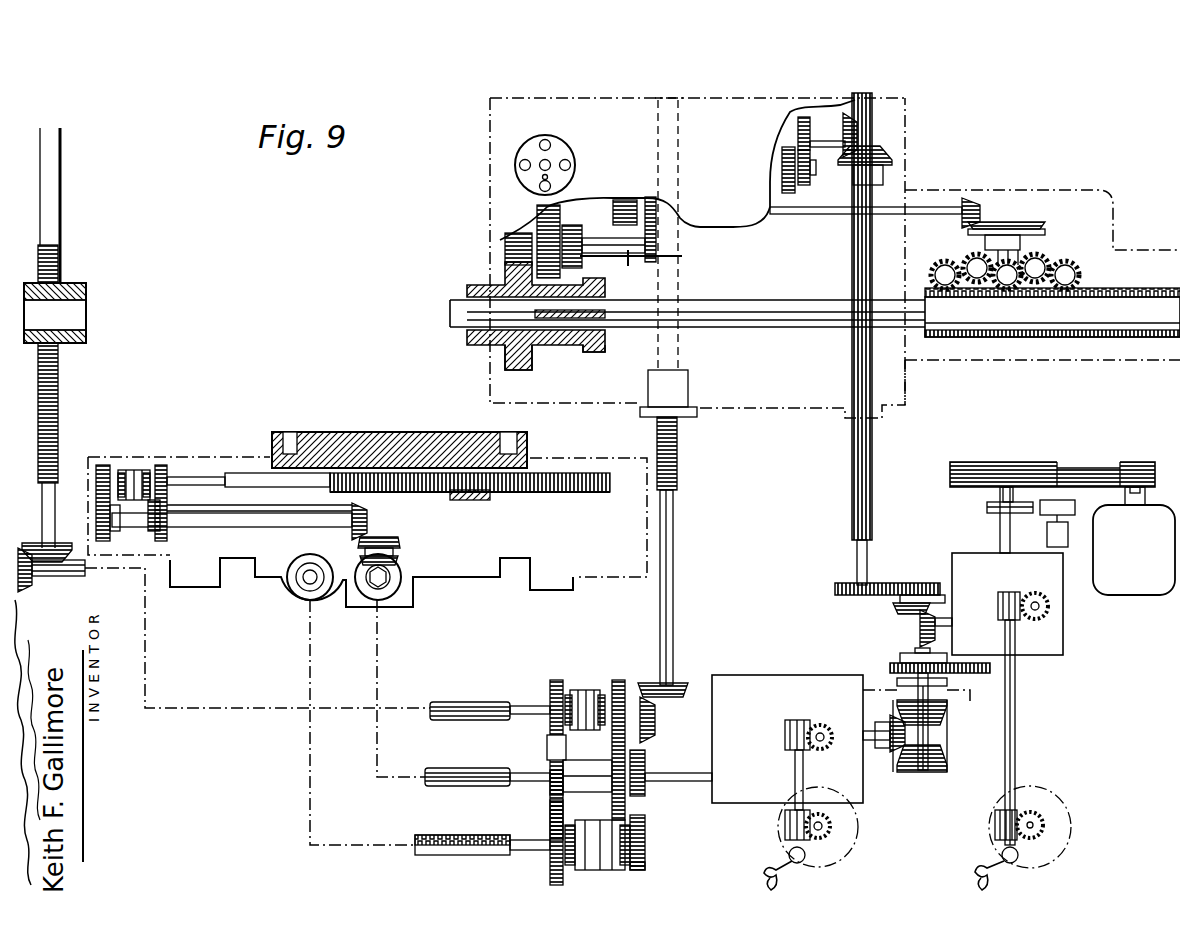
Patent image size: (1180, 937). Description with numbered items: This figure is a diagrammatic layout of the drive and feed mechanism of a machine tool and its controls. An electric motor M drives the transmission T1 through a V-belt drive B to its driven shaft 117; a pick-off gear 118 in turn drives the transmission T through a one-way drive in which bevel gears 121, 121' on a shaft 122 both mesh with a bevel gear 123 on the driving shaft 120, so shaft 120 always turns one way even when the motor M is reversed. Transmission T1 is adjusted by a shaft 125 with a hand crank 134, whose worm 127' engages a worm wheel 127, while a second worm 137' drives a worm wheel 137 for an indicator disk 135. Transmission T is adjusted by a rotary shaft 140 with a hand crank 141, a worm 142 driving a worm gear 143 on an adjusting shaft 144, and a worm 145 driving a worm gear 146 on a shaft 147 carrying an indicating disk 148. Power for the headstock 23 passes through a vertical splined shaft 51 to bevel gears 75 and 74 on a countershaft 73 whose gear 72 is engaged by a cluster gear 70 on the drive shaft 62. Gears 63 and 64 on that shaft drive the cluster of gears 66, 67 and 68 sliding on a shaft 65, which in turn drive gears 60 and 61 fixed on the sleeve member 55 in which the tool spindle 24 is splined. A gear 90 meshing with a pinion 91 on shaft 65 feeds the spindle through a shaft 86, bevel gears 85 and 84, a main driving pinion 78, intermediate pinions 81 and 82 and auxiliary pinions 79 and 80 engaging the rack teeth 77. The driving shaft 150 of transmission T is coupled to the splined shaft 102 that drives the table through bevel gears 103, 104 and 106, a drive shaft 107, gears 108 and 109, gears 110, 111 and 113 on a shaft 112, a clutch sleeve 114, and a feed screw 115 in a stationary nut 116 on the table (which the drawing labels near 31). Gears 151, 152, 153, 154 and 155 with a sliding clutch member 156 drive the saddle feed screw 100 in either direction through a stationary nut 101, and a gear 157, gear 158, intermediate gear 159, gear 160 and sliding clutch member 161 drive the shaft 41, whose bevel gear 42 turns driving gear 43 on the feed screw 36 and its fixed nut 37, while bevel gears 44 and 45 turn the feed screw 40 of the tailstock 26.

The headstock 23 is at (639, 198).
The tool spindle 24 is at (450, 305).
The tailstock 26 is at (86, 335).
The platform 31 is at (352, 428).
The feed screw 36 is at (677, 465).
The fixed nut 37 is at (688, 385).
The feed screw 40 is at (58, 395).
The shaft 41 is at (443, 702).
The bevel gear 42 is at (656, 720).
The driving gear 43 is at (670, 697).
The bevel gear 44 is at (18, 565).
The bevel gear 45 is at (44, 543).
The splined shaft 51 is at (855, 541).
The sleeve member 55 is at (475, 345).
The gear 60 is at (532, 372).
The gear 61 is at (598, 354).
The drive shaft 62 is at (584, 206).
The gear 63 is at (560, 205).
The gear 64 is at (626, 200).
The shaft 65 is at (629, 266).
The gear 66 is at (505, 240).
The gear 67 is at (540, 213).
The gear 68 is at (580, 262).
The cluster gear 70 is at (780, 180).
The gear 72 is at (800, 121).
The countershaft 73 is at (798, 136).
The bevel gear 74 is at (858, 131).
The bevel gear 75 is at (880, 156).
The rack teeth 77 is at (1126, 286).
The main driving pinion 78 is at (1003, 292).
The auxiliary driving pinion 79 is at (1072, 270).
The auxiliary driving pinion 80 is at (940, 266).
The intermediate pinion 81 is at (1046, 262).
The intermediate pinion 82 is at (971, 258).
The bevel gear 84 is at (1036, 224).
The bevel gear 85 is at (975, 200).
The shaft 86 is at (925, 207).
The gear 90 is at (684, 222).
The pinion 91 is at (682, 256).
The feed screw 100 is at (450, 828).
The stationary nut 101 is at (300, 585).
The splined shaft 102 is at (450, 760).
The bevel gear 103 is at (393, 572).
The double bevel gear 104 is at (388, 538).
The bevel gear 106 is at (368, 518).
The drive shaft 107 is at (275, 528).
The gear 108 is at (113, 532).
The gear 109 is at (160, 534).
The gear 110 is at (103, 465).
The gear 111 is at (162, 465).
The shaft 112 is at (195, 481).
The intermediate gear 113 is at (172, 507).
The clutch sleeve 114 is at (132, 470).
The feed screw 115 is at (250, 473).
The stationary nut 116 is at (487, 500).
The shaft 117 is at (1000, 536).
The pick-off gear 118 is at (990, 668).
The driving shaft 120 is at (876, 730).
The bevel gear 121 is at (943, 722).
The bevel gear 121' is at (948, 756).
The shaft 122 is at (915, 770).
The bevel gear 123 is at (903, 660).
The shaft 125 is at (1016, 737).
The worm wheel 127 is at (1032, 588).
The worm 127' is at (989, 596).
The hand crank 134 is at (983, 878).
The indicator disk 135 is at (1072, 829).
The worm wheel 137 is at (1070, 813).
The worm 137' is at (980, 825).
The rotary shaft 140 is at (795, 770).
The hand crank 141 is at (770, 862).
The worm 142 is at (787, 732).
The worm gear 143 is at (815, 725).
The adjusting shaft 144 is at (826, 749).
The worm 145 is at (785, 825).
The worm gear 146 is at (835, 835).
The shaft 147 is at (832, 826).
The indicating disk 148 is at (845, 858).
The driving shaft 150 is at (680, 773).
The gear 151 is at (550, 790).
The gear 152 is at (648, 785).
The gear 153 is at (550, 822).
The idler gear 154 is at (645, 815).
The gear 155 is at (646, 864).
The sliding clutch member 156 is at (582, 808).
The gear 157 is at (612, 750).
The gear 158 is at (624, 684).
The intermediate gear 159 is at (547, 740).
The gear 160 is at (555, 680).
The sliding clutch member 161 is at (578, 690).
The multiple speed transmission T is at (783, 672).
The transmission T1 is at (1066, 642).
The V-belt drive B is at (1090, 460).
The electric motor M is at (1150, 596).